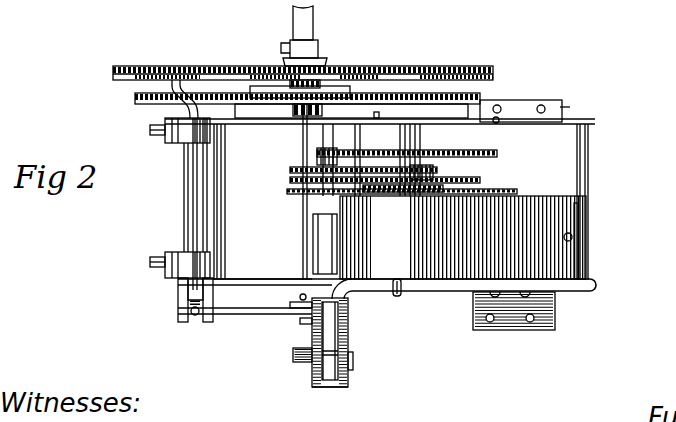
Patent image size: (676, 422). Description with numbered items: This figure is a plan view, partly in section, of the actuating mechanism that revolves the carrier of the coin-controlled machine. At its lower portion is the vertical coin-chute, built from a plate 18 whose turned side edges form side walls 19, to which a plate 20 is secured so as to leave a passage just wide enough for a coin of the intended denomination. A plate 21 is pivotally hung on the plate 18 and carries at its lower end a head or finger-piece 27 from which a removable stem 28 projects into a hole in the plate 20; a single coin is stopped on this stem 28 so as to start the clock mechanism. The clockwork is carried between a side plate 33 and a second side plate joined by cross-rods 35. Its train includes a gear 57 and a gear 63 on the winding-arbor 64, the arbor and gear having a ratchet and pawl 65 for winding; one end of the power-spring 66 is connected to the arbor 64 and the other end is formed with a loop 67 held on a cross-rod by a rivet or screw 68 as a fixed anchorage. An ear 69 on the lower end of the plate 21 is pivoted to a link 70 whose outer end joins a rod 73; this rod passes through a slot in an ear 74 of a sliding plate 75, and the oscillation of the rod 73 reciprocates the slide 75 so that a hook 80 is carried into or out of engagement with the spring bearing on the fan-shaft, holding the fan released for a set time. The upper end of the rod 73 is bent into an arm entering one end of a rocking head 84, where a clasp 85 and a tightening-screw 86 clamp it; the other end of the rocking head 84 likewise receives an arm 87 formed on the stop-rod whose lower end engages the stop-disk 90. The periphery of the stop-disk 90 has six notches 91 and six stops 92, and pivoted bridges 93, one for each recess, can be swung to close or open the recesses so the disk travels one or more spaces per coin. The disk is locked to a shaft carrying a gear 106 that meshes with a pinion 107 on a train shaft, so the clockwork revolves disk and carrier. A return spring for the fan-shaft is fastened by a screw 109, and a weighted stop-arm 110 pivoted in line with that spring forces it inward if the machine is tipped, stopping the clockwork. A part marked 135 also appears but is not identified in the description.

The plate 18 is at (300, 326).
The side walls 19 is at (354, 300).
The plate 20 is at (338, 332).
The plate 21 is at (312, 370).
The head or finger-piece 27 is at (293, 356).
The stem 28 is at (338, 357).
The side plate 33 is at (248, 122).
The cross-rods 35 is at (224, 204).
The gear 57 is at (316, 236).
The gear 63 is at (514, 194).
The winding-arbor 64 is at (412, 146).
The ratchet and pawl 65 is at (446, 190).
The power-spring 66 is at (463, 237).
The loop 67 is at (576, 214).
The rivet or screw 68 is at (573, 237).
The ear 69 is at (278, 326).
The link 70 is at (248, 316).
The rod 73 is at (193, 318).
The ear 74 is at (182, 324).
The sliding plate 75 is at (262, 283).
The hook 80 is at (395, 298).
The rocking head 84 is at (192, 190).
The clasp 85 is at (176, 140).
The tightening-screw 86 is at (150, 132).
The arm 87 is at (192, 296).
The stop-disk 90 is at (185, 81).
The notches 91 is at (148, 66).
The stops 92 is at (113, 67).
The bridges 93 is at (160, 75).
The gear 106 is at (486, 96).
The pinion 107 is at (315, 92).
The screw 109 is at (412, 119).
The stop-arm 110 is at (380, 114).
The lug 135 is at (575, 107).